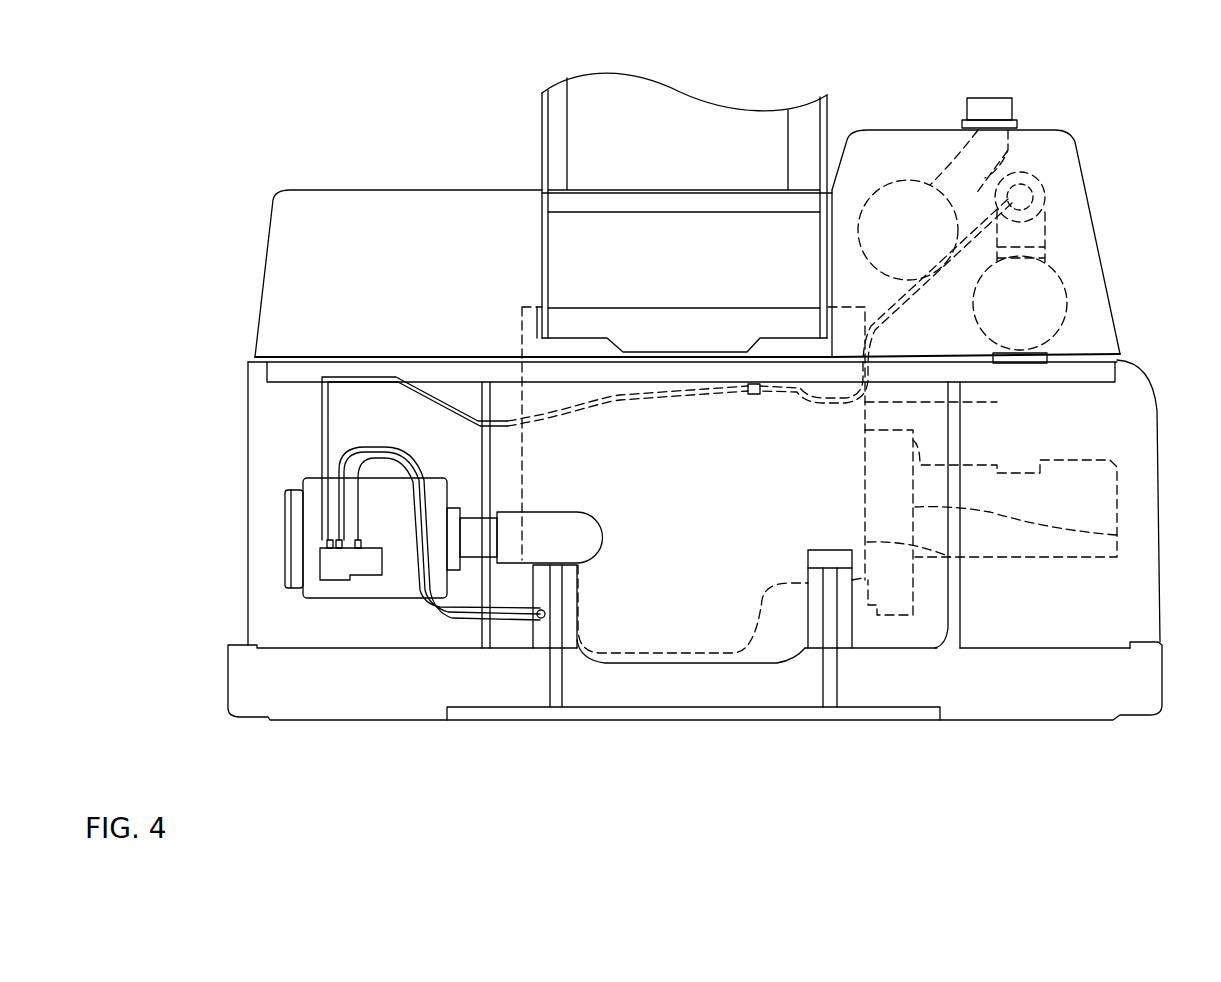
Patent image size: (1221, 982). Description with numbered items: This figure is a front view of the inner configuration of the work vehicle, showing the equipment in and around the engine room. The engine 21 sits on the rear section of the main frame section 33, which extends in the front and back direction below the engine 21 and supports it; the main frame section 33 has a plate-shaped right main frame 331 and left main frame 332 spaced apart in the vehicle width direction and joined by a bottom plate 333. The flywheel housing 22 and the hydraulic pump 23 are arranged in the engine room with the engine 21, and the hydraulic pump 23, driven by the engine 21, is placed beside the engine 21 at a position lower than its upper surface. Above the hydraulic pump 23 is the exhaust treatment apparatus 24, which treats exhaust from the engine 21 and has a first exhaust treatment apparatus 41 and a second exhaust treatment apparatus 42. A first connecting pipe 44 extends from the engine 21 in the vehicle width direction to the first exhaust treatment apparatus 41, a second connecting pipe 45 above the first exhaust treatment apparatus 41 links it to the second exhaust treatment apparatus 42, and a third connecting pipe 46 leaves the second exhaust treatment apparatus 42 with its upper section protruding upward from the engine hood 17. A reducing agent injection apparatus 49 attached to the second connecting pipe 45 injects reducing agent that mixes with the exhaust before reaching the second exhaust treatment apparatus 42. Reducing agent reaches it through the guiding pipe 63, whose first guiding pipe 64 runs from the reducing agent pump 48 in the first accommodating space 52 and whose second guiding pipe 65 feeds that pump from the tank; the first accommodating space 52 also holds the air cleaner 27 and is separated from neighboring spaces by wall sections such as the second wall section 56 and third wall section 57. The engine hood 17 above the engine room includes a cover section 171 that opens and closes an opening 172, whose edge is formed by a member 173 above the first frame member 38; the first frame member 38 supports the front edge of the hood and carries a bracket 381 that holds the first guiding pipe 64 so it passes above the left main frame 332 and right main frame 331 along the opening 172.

The engine hood 17 is at (415, 185).
The cover section 171 is at (657, 105).
The opening 172 is at (732, 280).
The member 173 is at (572, 340).
The first guiding pipe 64 is at (620, 395).
The exhaust treatment apparatus 24 is at (1057, 250).
The third connecting pipe 46 is at (985, 105).
The second connecting pipe 45 is at (1018, 175).
The second exhaust treatment apparatus 42 is at (890, 195).
The reducing agent injection apparatus 49 is at (1030, 180).
The first exhaust treatment apparatus 41 is at (1067, 290).
The guiding pipe 63 is at (922, 298).
The first frame member 38 is at (290, 367).
The first connecting pipe 44 is at (997, 397).
The first accommodating space 52 is at (290, 452).
The air cleaner 27 is at (305, 524).
The reducing agent pump 48 is at (330, 572).
The bracket 381 is at (753, 394).
The second guiding pipe 65 is at (428, 600).
The third wall section 57 is at (503, 587).
The right main frame 331 is at (555, 668).
The second wall section 56 is at (690, 540).
The main frame section 33 is at (663, 727).
The bottom plate 333 is at (788, 715).
The left main frame 332 is at (837, 673).
The engine 21 is at (953, 558).
The hydraulic pump 23 is at (1120, 502).
The flywheel housing 22 is at (1117, 535).